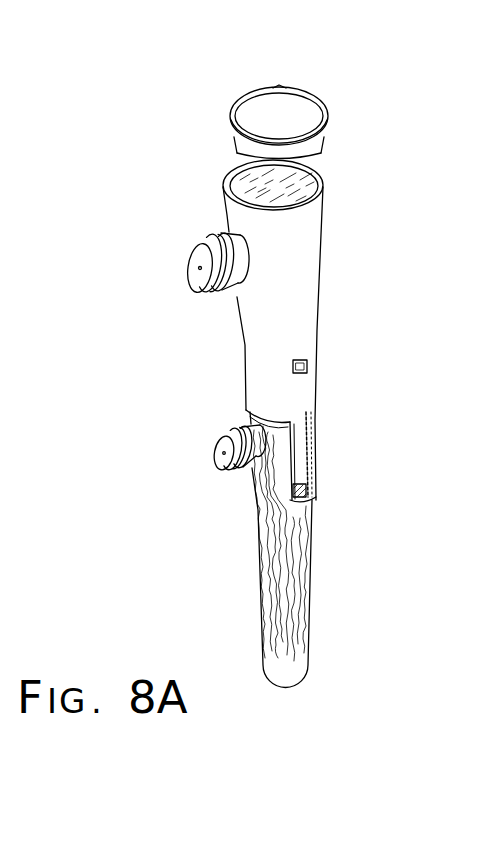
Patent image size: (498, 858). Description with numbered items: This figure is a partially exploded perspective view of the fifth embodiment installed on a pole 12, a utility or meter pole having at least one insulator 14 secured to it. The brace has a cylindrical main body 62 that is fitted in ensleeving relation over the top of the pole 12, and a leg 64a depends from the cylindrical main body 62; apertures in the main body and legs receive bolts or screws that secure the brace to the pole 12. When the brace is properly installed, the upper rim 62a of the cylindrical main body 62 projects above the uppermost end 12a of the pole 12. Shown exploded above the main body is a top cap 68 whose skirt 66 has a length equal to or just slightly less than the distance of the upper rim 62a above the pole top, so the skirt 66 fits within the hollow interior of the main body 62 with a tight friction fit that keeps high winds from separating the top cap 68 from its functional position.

The pole 12 is at (253, 540).
The uppermost end of pole 12a is at (295, 188).
The insulator 14 is at (195, 290).
The main body 62 is at (290, 307).
The upper rim 62a is at (225, 191).
The leg 64a is at (300, 452).
The skirt 66 is at (237, 147).
The top cap 68 is at (248, 91).